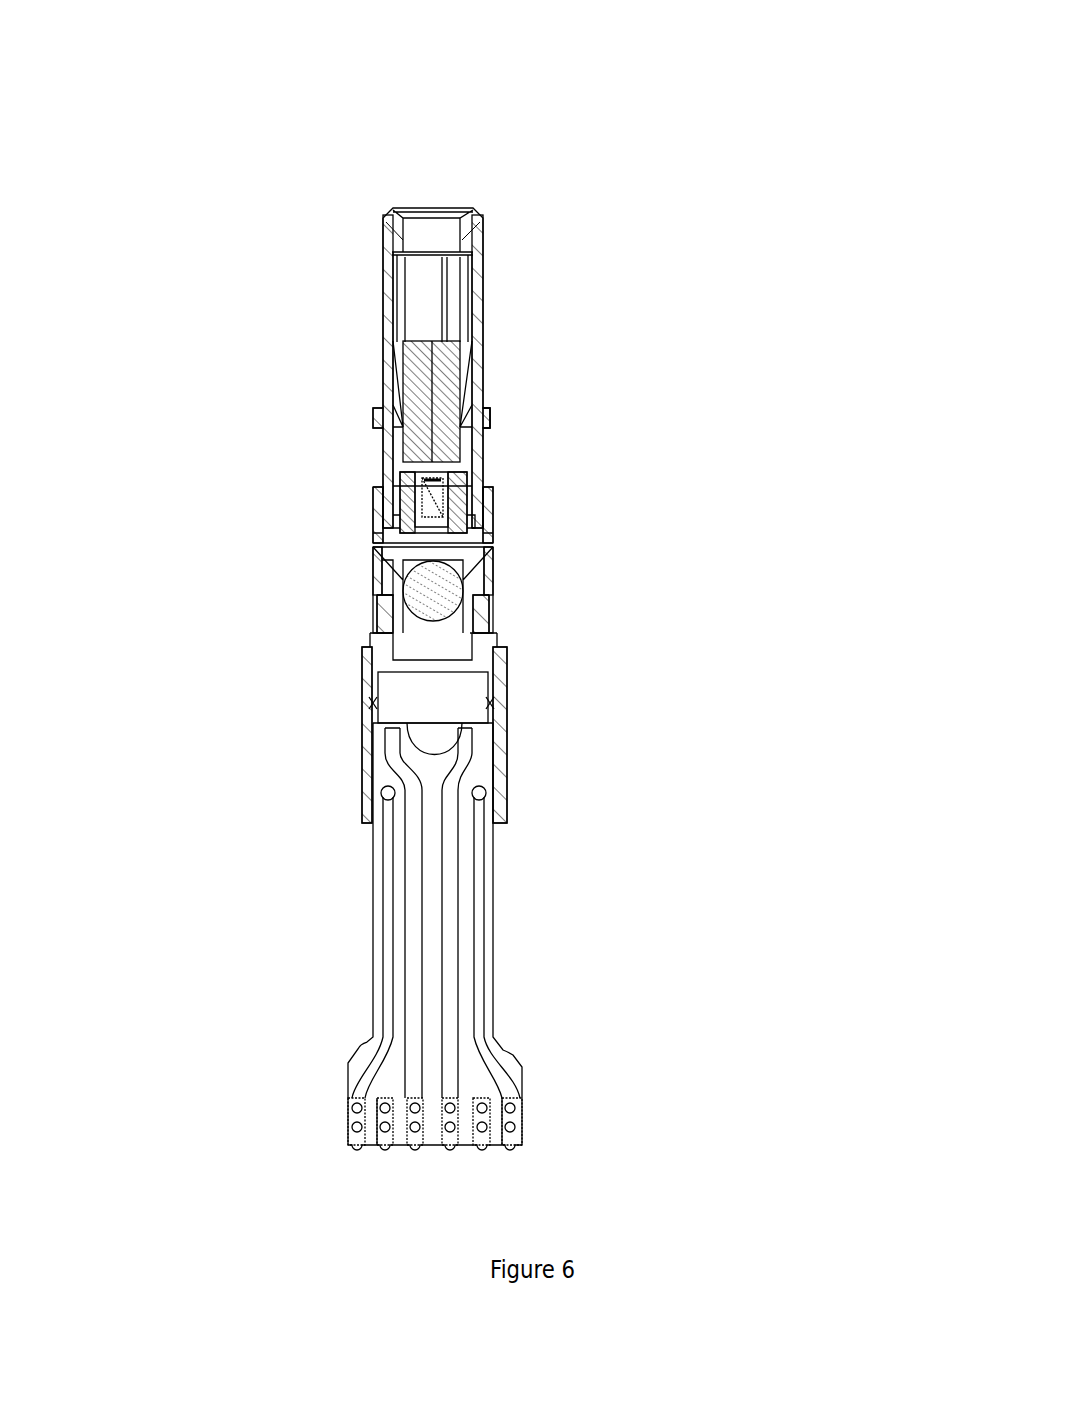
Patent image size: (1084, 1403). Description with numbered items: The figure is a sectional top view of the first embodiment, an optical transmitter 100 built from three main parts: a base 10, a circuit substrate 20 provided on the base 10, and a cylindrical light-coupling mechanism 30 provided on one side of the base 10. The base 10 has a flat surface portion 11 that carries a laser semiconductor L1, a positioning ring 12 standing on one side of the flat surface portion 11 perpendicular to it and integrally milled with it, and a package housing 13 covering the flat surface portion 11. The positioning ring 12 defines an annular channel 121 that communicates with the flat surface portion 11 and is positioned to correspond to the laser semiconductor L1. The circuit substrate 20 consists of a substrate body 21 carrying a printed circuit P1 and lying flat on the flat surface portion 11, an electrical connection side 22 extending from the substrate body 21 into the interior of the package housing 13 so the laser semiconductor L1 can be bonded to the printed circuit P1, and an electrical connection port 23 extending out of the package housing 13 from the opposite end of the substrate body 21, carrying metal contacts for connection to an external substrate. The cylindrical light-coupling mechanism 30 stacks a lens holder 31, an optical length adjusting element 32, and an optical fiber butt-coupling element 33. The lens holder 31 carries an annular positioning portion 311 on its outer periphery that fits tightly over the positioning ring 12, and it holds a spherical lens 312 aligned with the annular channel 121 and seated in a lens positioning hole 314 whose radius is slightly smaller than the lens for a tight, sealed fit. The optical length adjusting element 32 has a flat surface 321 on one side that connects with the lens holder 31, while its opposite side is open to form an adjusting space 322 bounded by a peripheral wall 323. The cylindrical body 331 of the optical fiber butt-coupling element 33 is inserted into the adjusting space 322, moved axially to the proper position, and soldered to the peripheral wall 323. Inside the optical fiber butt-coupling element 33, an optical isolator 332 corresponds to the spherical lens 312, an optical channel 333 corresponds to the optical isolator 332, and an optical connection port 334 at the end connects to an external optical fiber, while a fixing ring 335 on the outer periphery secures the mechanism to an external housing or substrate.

The optical transmitter 100 is at (872, 50).
The base 10 is at (364, 735).
The flat surface portion 11 is at (372, 674).
The positioning ring 12 is at (495, 618).
The annular channel 121 is at (412, 633).
The package housing 13 is at (503, 690).
The laser semiconductor L1 is at (372, 700).
The circuit substrate 20 is at (492, 966).
The substrate body 21 is at (404, 955).
The electrical connection side 22 is at (440, 735).
The electrical connection port 23 is at (520, 1115).
The printed circuit P1 is at (447, 886).
The cylindrical light-coupling mechanism 30 is at (483, 451).
The lens holder 31 is at (495, 591).
The annular positioning portion 311 is at (378, 596).
The spherical lens 312 is at (493, 587).
The lens positioning hole 314 is at (378, 562).
The optical length adjusting element 32 is at (493, 528).
The flat surface 321 is at (493, 547).
The adjusting space 322 is at (378, 546).
The peripheral wall 323 is at (380, 517).
The optical fiber butt-coupling element 33 is at (482, 312).
The cylindrical body 331 is at (482, 478).
The optical isolator 332 is at (398, 478).
The optical channel 333 is at (482, 376).
The optical connection port 334 is at (483, 214).
The fixing ring 335 is at (493, 422).